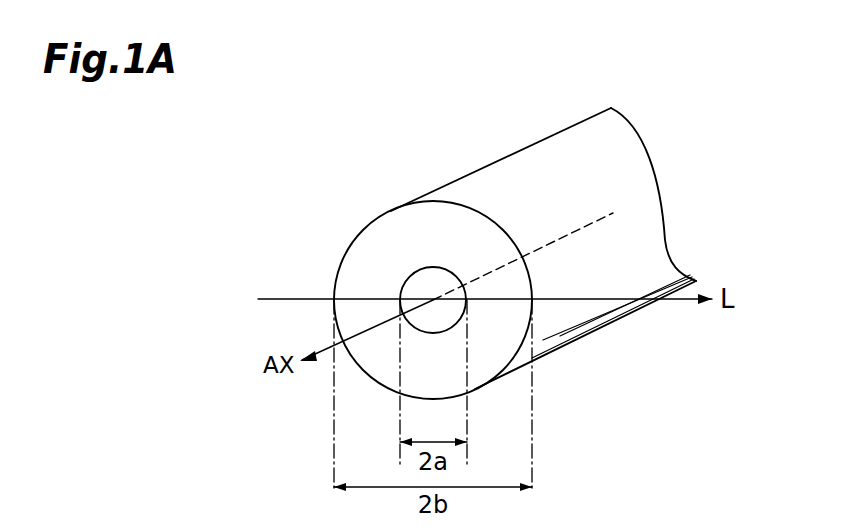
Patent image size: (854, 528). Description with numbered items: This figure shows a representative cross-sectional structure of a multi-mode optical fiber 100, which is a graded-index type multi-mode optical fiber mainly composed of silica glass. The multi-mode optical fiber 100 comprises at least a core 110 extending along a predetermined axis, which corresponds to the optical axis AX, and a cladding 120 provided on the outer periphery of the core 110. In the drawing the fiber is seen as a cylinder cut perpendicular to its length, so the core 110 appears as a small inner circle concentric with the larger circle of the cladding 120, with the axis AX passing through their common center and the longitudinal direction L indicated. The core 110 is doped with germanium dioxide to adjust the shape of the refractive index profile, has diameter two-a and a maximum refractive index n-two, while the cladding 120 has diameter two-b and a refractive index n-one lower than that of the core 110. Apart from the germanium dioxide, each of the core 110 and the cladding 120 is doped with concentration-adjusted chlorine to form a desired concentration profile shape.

The multi-mode optical fiber 100 is at (573, 121).
The core 110 is at (420, 288).
The cladding 120 is at (435, 228).